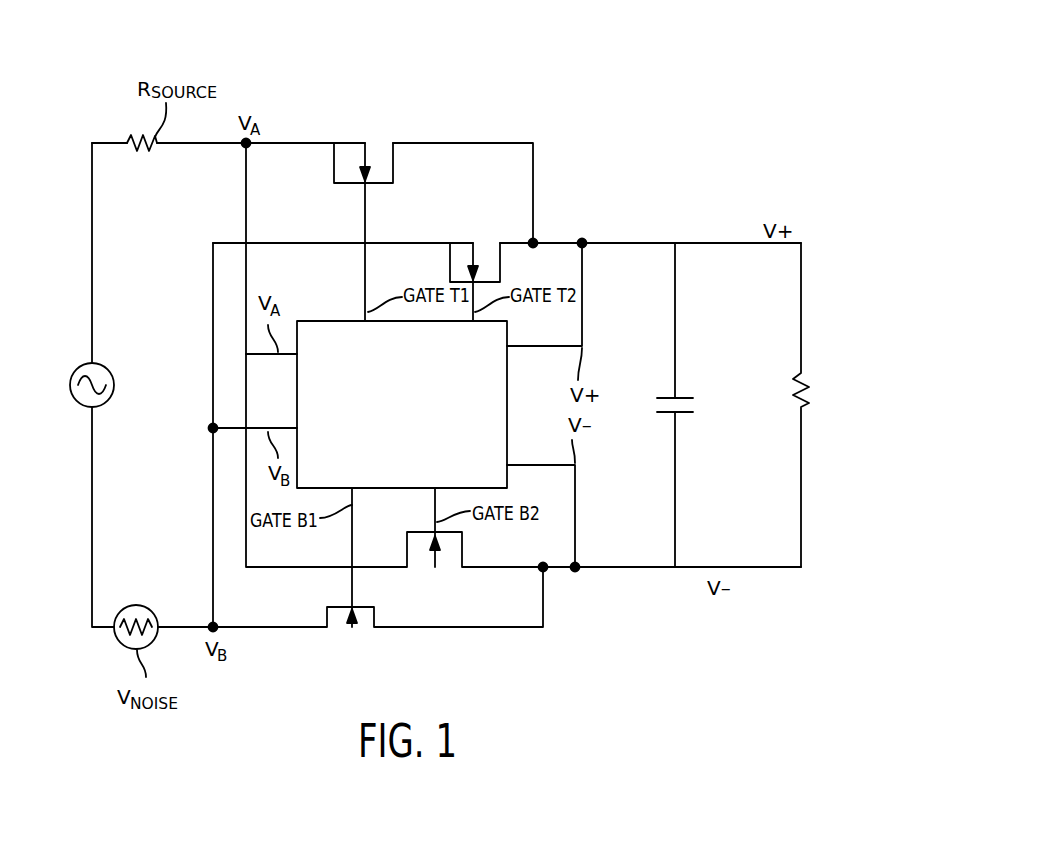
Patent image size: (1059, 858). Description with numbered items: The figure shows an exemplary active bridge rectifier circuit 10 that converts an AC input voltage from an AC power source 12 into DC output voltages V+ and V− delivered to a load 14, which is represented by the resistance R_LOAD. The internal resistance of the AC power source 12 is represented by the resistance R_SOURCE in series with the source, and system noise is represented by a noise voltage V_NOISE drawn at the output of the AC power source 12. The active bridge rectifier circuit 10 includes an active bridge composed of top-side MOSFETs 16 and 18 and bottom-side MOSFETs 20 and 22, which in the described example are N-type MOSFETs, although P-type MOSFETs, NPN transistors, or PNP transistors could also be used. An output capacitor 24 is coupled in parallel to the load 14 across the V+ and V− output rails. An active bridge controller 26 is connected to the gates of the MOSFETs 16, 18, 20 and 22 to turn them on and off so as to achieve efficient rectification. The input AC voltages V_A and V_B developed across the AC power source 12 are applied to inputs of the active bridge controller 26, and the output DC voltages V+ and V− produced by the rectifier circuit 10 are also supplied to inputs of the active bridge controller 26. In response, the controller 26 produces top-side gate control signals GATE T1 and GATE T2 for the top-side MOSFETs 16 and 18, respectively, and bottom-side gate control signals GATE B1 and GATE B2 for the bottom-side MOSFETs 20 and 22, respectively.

The active bridge rectifier circuit 10 is at (674, 93).
The AC power source 12 is at (114, 385).
The load 14 is at (803, 393).
The top-side MOSFET 16 is at (352, 143).
The top-side MOSFET 18 is at (465, 243).
The bottom-side MOSFET 20 is at (362, 628).
The bottom-side MOSFET 22 is at (450, 568).
The output capacitor 24 is at (670, 398).
The active bridge controller 26 is at (507, 418).